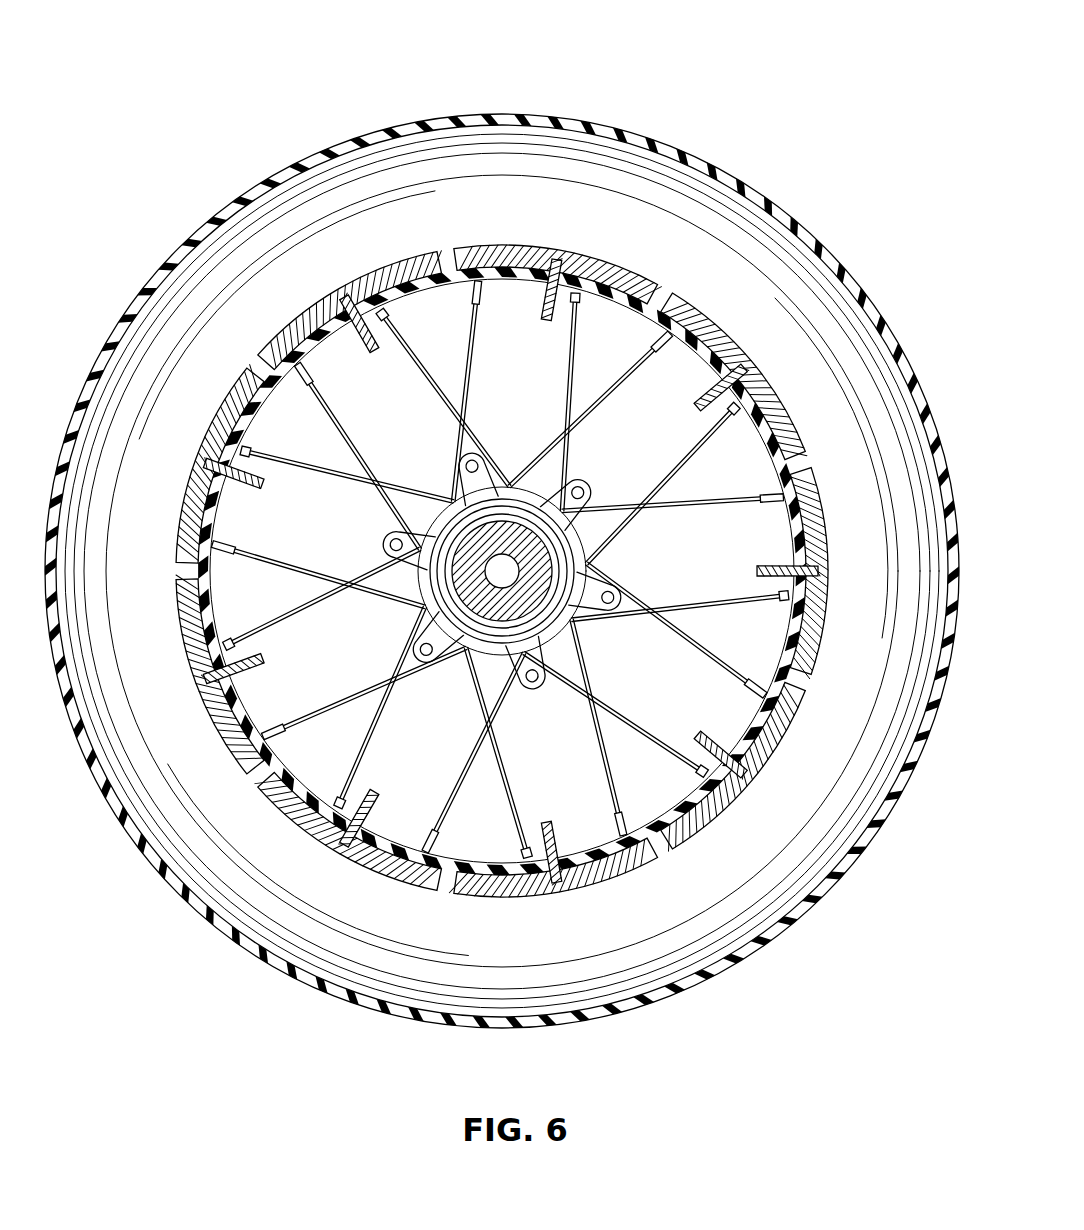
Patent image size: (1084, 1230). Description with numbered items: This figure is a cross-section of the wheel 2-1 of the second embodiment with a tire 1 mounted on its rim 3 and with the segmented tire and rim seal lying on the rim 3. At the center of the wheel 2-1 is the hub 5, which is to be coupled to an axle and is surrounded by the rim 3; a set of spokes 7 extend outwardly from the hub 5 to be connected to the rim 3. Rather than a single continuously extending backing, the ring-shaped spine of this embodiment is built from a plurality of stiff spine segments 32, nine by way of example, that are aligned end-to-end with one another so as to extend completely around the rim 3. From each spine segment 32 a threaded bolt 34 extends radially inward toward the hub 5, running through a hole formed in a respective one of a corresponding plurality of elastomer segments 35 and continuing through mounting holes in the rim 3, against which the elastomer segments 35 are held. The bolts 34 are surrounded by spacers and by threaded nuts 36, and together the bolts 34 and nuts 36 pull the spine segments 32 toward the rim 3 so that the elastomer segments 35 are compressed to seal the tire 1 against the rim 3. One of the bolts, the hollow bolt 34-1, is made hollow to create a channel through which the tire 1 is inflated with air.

The wheel 2-1 is at (735, 80).
The tire 1 is at (776, 180).
The rim 3 is at (225, 578).
The hub 5 is at (607, 559).
The spokes 7 is at (585, 712).
The stiff spine segments 32 is at (730, 334).
The threaded bolt 34 is at (543, 312).
The hollow bolt 34-1 is at (367, 806).
The elastomer segments 35 is at (774, 426).
The threaded nuts 36 is at (722, 703).